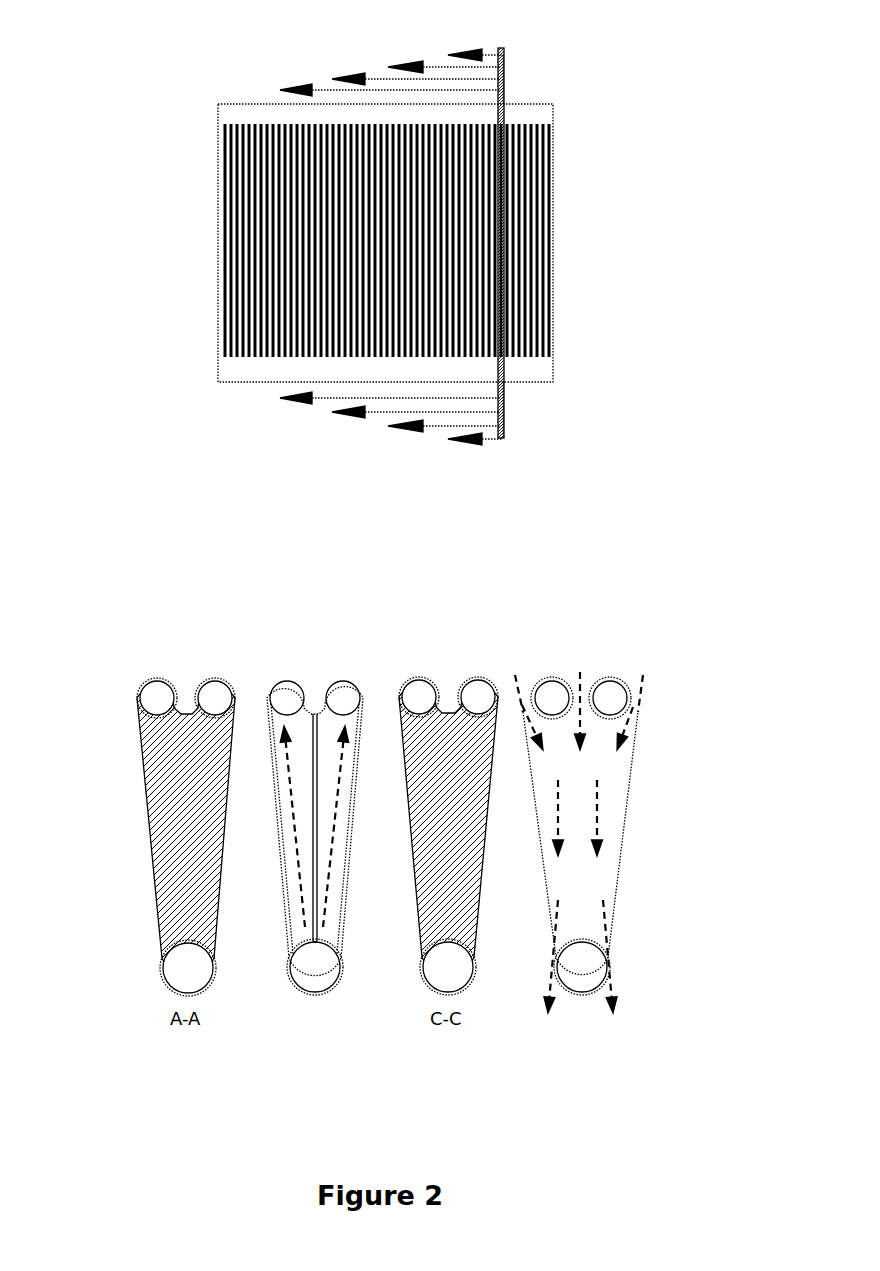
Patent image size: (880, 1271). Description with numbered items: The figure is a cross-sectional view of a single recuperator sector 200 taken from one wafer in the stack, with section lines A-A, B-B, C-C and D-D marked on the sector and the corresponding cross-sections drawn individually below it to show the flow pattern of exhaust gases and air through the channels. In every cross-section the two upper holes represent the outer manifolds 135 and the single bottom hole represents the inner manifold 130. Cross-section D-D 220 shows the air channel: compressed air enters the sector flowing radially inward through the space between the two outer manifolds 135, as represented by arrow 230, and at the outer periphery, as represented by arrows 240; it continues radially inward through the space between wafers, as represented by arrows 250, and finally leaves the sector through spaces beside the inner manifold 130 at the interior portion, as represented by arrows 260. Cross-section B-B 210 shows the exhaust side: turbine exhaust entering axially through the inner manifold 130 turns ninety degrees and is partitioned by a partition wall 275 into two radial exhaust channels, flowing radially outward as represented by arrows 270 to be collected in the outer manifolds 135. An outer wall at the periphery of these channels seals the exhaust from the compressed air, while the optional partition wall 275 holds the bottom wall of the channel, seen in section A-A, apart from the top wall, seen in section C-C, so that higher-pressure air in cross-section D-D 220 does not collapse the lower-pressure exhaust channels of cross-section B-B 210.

The sector 200 is at (156, 126).
The inner manifold 130 is at (165, 984).
The outer manifolds 135 is at (204, 694).
The cross-section B-B 210 is at (324, 878).
The cross-section D-D 220 is at (640, 813).
The arrow 230 is at (577, 695).
The arrows 240 is at (634, 663).
The arrows 250 is at (627, 813).
The arrows 260 is at (634, 962).
The arrows 270 is at (327, 838).
The partition wall 275 is at (328, 727).